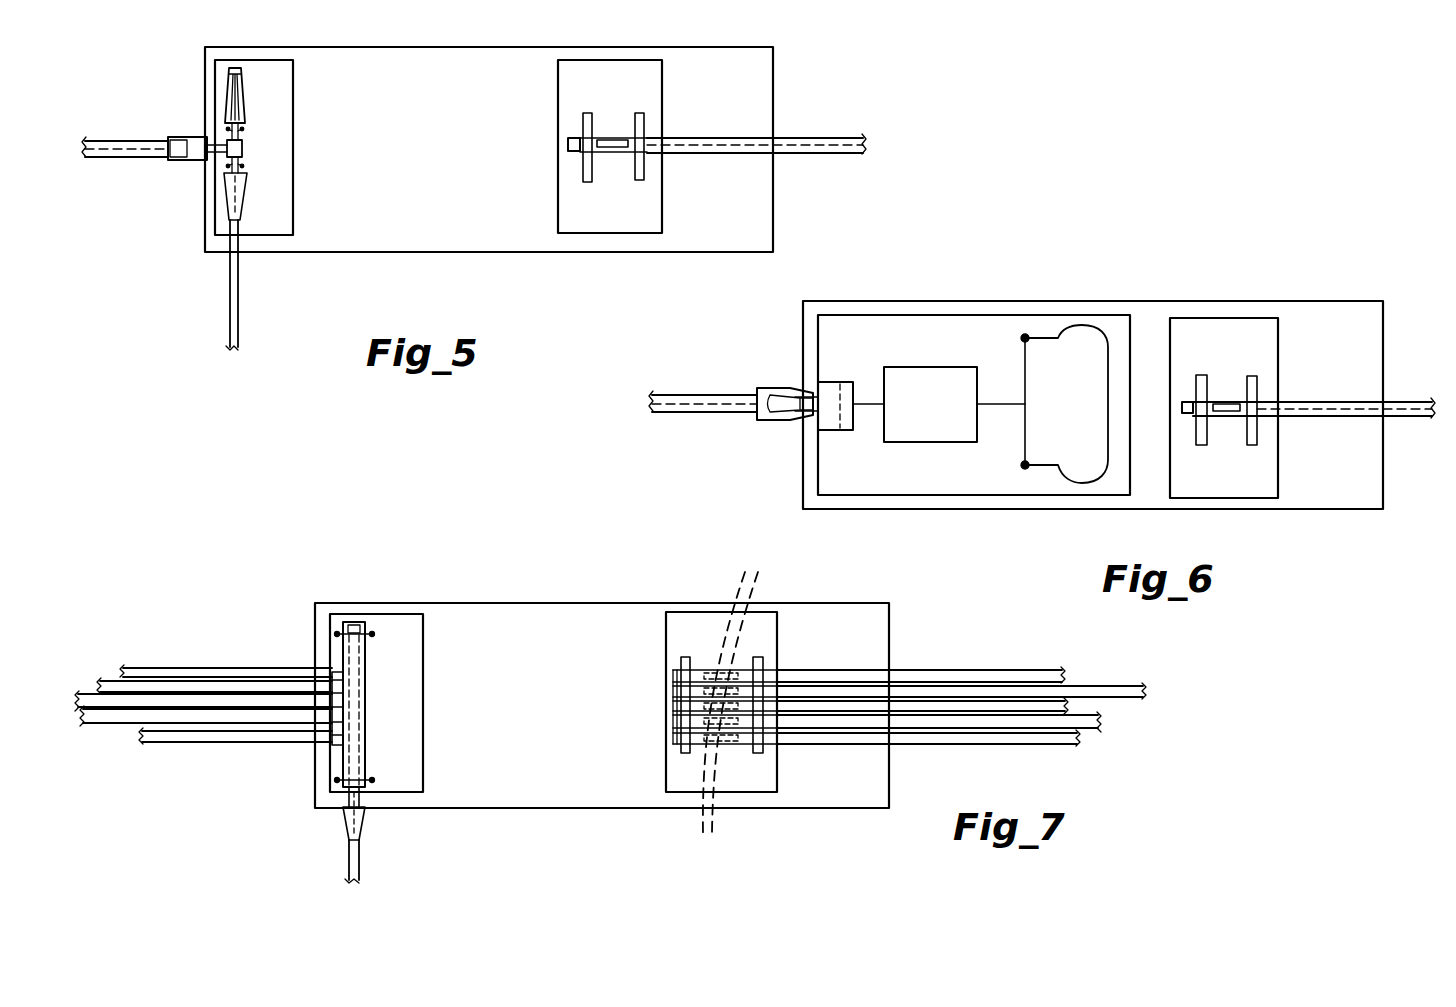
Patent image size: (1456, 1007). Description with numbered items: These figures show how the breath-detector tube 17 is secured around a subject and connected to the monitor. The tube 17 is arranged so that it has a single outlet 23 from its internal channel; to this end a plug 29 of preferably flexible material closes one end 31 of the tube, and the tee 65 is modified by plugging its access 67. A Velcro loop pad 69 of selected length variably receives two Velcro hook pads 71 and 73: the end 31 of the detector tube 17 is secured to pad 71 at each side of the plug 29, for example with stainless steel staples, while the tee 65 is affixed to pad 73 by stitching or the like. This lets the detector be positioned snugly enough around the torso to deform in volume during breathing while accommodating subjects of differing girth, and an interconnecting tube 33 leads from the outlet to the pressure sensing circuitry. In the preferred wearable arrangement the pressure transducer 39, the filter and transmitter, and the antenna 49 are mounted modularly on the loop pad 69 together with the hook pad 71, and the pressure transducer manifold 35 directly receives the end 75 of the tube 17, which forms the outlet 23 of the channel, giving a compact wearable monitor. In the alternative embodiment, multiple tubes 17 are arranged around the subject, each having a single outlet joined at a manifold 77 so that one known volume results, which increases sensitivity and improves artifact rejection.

In FIG. 5, the tube 17 is at (103, 140).
In FIG. 6, the tube 17 is at (713, 367).
In FIG. 7, the tube 17 is at (203, 687).
In FIG. 5, the outlet 23 is at (212, 142).
In FIG. 6, the outlet 23 is at (797, 387).
In FIG. 7, the outlet 23 is at (333, 668).
In FIG. 5, the plug 29 is at (617, 150).
In FIG. 6, the plug 29 is at (1232, 413).
In FIG. 7, the plug 29 is at (745, 574).
In FIG. 5, the end 31 is at (571, 136).
In FIG. 6, the end 31 is at (1187, 413).
In FIG. 5, the interconnecting tube 33 is at (238, 292).
In FIG. 7, the interconnecting tube 33 is at (360, 858).
In FIG. 6, the pressure transducer manifold 35 is at (827, 387).
In FIG. 6, the pressure transducer 39 is at (846, 387).
In FIG. 6, the antenna 49 is at (1098, 333).
In FIG. 5, the tee 65 is at (242, 148).
In FIG. 5, the access 67 is at (240, 103).
In FIG. 5, the loop pad 69 is at (530, 36).
In FIG. 6, the loop pad 69 is at (1322, 488).
In FIG. 7, the loop pad 69 is at (863, 620).
In FIG. 5, the hook pad 71 is at (639, 72).
In FIG. 6, the hook pad 71 is at (1257, 335).
In FIG. 7, the hook pad 71 is at (680, 623).
In FIG. 5, the hook pad 73 is at (278, 72).
In FIG. 7, the hook pad 73 is at (443, 565).
In FIG. 6, the end 75 is at (797, 427).
In FIG. 7, the manifold 77 is at (355, 737).